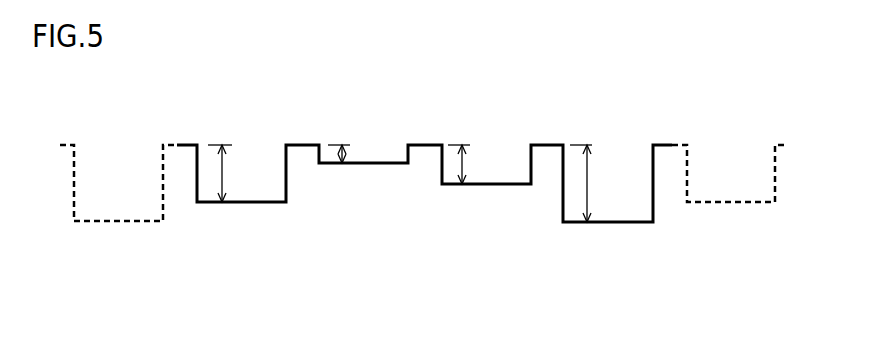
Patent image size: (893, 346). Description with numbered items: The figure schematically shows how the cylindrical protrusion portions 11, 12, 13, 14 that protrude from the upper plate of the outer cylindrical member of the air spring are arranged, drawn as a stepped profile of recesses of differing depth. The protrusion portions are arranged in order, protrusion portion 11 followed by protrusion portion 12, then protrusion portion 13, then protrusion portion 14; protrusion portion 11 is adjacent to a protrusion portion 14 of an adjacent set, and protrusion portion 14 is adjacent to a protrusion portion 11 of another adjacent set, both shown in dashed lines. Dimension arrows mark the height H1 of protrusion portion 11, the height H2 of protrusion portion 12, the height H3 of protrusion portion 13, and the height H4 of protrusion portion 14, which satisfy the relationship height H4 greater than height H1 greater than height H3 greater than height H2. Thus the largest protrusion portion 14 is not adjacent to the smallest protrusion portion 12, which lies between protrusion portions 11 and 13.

The protrusion portion 11 is at (253, 203).
The protrusion portion 12 is at (382, 164).
The protrusion portion 13 is at (502, 185).
The protrusion portion 14 is at (125, 222).
The height H1 is at (230, 163).
The height H2 is at (360, 153).
The height H3 is at (474, 162).
The height H4 is at (598, 171).